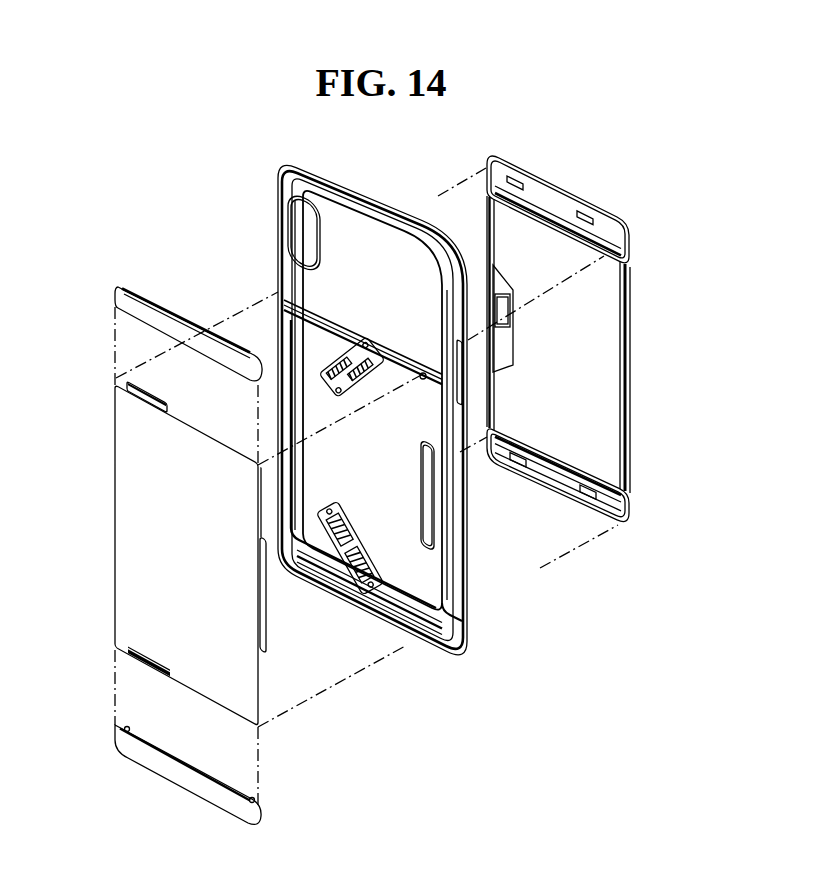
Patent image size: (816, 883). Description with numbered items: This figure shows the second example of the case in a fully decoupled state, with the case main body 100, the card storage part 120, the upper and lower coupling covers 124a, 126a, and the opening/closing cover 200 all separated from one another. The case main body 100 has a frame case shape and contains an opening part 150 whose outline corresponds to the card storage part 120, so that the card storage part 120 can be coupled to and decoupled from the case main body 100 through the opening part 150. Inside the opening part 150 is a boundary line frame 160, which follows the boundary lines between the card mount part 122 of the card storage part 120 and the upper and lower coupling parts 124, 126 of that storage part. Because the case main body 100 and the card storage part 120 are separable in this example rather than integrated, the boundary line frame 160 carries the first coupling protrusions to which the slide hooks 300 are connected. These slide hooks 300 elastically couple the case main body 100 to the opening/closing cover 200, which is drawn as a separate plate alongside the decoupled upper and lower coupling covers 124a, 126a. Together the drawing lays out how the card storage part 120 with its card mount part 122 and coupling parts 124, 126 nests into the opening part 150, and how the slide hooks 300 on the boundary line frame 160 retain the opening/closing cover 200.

The case main body 100 is at (352, 184).
The card storage part 120 is at (601, 339).
The card mount part 122 is at (613, 370).
The upper coupling part 124 is at (614, 240).
The lower coupling part 126 is at (578, 475).
The upper coupling cover 124a is at (141, 306).
The lower coupling cover 126a is at (150, 758).
The opening part 150 is at (318, 590).
The boundary line frame 160 is at (282, 296).
The opening/closing cover 200 is at (162, 523).
The slide hooks 300 is at (372, 382).